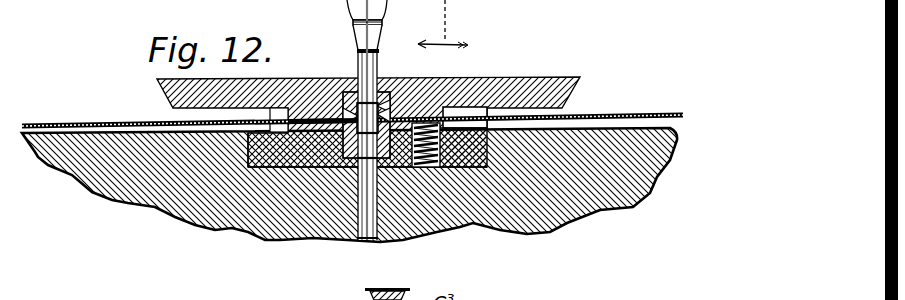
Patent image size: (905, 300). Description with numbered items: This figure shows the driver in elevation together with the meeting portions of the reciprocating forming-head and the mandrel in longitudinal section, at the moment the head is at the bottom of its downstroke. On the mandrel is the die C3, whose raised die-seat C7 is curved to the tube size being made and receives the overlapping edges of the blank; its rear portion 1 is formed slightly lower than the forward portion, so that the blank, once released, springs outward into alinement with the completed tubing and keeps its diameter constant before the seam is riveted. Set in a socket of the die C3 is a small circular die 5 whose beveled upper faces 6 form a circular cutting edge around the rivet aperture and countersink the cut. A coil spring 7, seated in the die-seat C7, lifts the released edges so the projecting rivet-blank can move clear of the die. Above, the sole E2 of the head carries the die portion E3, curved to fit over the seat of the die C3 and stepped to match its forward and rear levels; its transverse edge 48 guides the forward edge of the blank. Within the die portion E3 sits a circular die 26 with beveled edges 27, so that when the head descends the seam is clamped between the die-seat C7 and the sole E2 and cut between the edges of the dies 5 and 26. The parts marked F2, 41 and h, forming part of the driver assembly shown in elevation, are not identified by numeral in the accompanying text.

The die-seat C7 is at (262, 172).
The die portion E3 is at (312, 107).
The mandrel die C3 is at (290, 172).
The rear portion of die-seat 1 is at (323, 168).
The sole E2 is at (537, 80).
The beveled upper faces 6 is at (388, 160).
The spring h is at (417, 167).
The spring 7 is at (441, 167).
The circular die 26 is at (383, 95).
The beveled edges 27 is at (388, 100).
The spindle F2 is at (345, 35).
The collar 41 is at (352, 46).
The circular die 5 is at (353, 239).
The transverse edge 48 is at (440, 80).